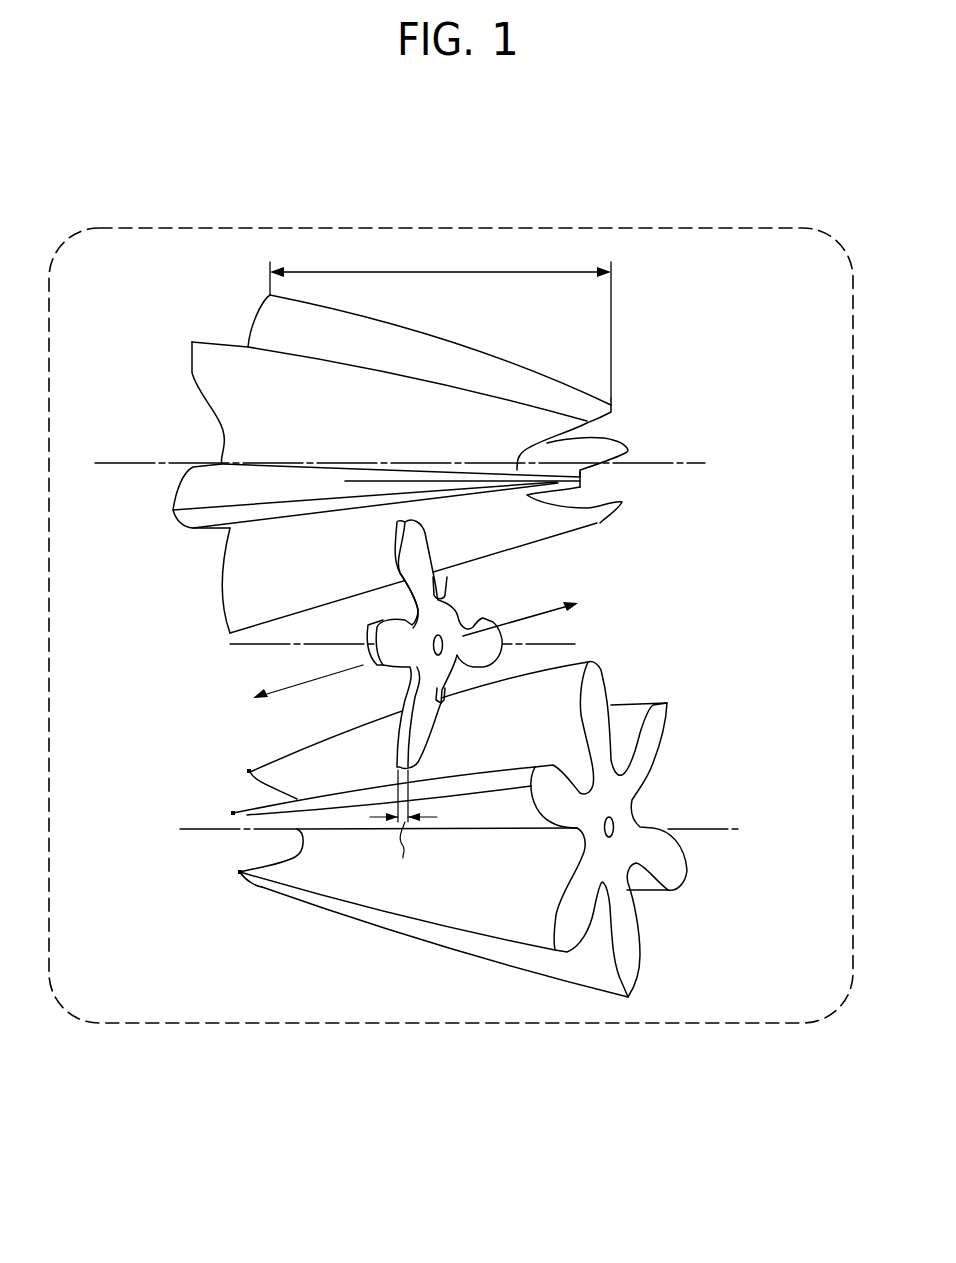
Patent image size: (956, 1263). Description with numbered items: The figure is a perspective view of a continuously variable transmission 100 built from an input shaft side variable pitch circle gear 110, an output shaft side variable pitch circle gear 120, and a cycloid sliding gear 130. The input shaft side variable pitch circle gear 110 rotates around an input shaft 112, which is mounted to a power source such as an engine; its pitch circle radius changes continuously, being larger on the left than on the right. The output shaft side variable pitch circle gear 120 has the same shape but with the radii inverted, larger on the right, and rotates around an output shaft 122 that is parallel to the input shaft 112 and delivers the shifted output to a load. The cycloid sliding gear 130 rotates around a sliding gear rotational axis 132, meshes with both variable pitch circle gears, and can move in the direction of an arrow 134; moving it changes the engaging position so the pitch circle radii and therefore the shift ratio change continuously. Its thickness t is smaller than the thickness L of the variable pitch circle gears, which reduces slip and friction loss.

The continuously variable transmission 100 is at (770, 1023).
The input shaft side variable pitch circle gear 110 is at (580, 402).
The input shaft 112 is at (167, 465).
The output shaft side variable pitch circle gear 120 is at (657, 746).
The output shaft 122 is at (708, 827).
The cycloid sliding gear 130 is at (439, 614).
The sliding gear rotational axis 132 is at (547, 644).
The arrow 134 is at (287, 690).